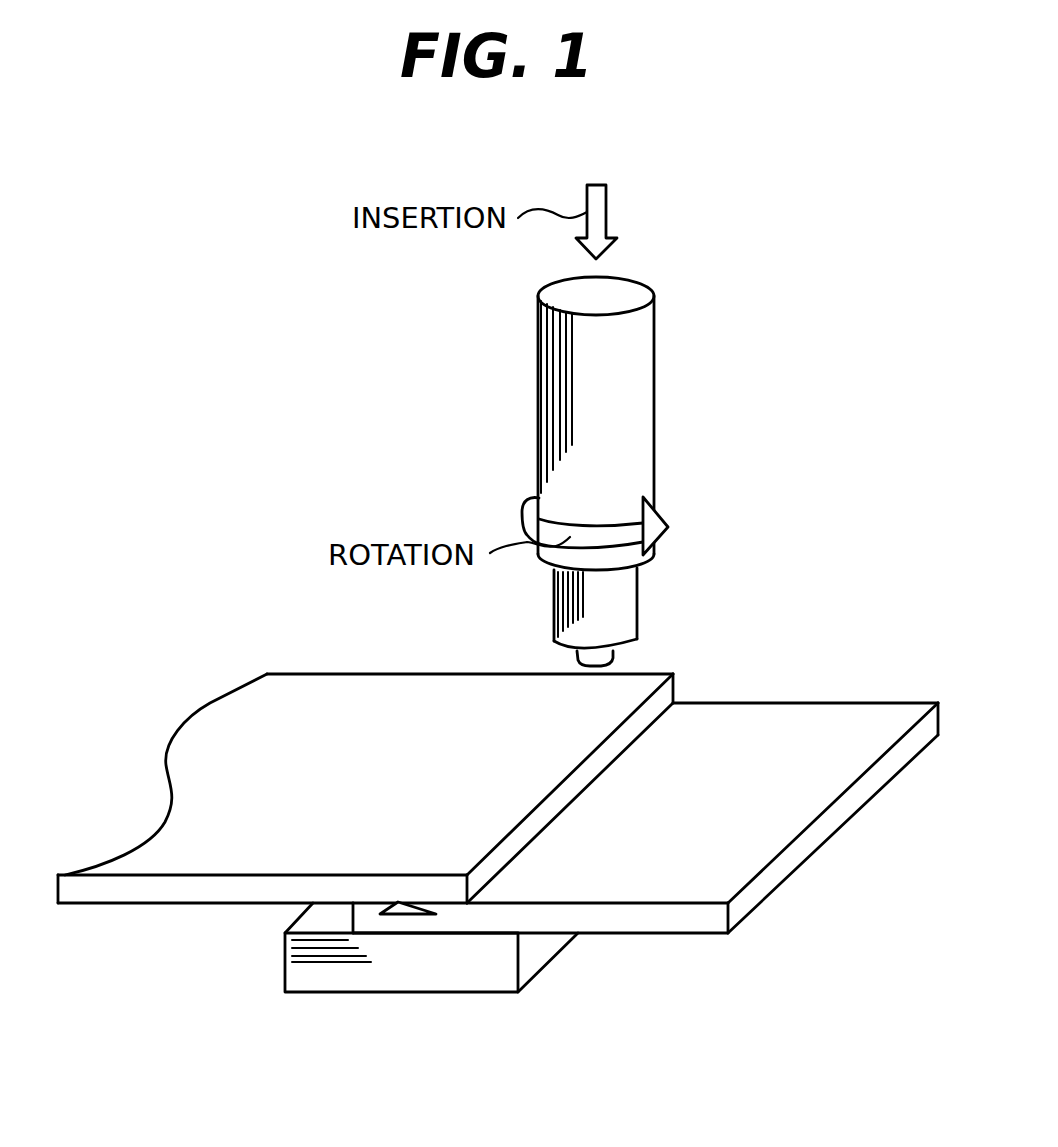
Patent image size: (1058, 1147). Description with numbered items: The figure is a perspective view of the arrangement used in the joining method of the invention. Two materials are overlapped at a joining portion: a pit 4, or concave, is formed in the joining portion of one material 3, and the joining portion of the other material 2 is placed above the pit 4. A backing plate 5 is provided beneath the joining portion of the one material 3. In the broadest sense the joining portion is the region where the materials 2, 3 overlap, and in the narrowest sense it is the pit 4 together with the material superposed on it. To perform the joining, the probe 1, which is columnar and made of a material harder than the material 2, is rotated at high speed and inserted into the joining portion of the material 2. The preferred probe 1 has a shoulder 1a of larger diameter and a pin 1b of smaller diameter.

The probe 1 is at (633, 372).
The shoulder 1a is at (602, 605).
The pin 1b is at (601, 650).
The other material 2 is at (212, 718).
The one material 3 is at (592, 886).
The pit 4 is at (401, 914).
The backing plate 5 is at (465, 968).